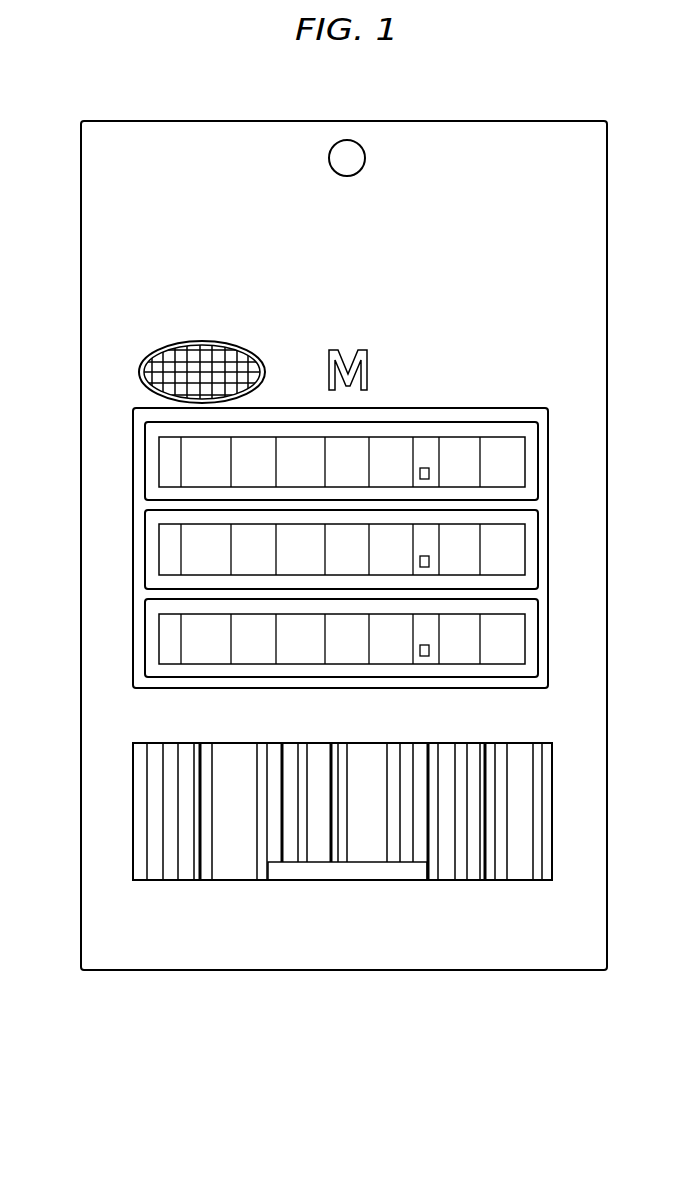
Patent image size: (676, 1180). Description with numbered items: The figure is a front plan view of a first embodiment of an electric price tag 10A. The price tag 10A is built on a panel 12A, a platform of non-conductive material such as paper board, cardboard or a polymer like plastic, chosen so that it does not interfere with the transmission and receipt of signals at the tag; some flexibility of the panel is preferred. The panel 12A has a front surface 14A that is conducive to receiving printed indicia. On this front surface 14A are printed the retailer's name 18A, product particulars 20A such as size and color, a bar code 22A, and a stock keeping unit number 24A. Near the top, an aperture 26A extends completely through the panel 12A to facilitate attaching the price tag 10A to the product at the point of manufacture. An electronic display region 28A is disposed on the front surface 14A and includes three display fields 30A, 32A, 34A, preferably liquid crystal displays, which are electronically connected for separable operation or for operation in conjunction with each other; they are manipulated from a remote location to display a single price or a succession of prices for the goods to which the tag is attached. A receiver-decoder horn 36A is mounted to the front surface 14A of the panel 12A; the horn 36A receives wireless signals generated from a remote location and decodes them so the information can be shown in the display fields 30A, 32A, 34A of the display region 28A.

The price tag 10A is at (357, 970).
The panel 12A is at (81, 683).
The front surface 14A is at (90, 355).
The retailer's name 18A is at (450, 208).
The product particulars 20A is at (368, 354).
The bar code 22A is at (233, 743).
The stock keeping unit (SKU) number 24A is at (420, 918).
The aperture 26A is at (330, 162).
The electronic display region 28A is at (133, 430).
The display field 30A is at (145, 477).
The display field 32A is at (145, 567).
The display field 34A is at (145, 655).
The receiver-decoder horn 36A is at (202, 340).